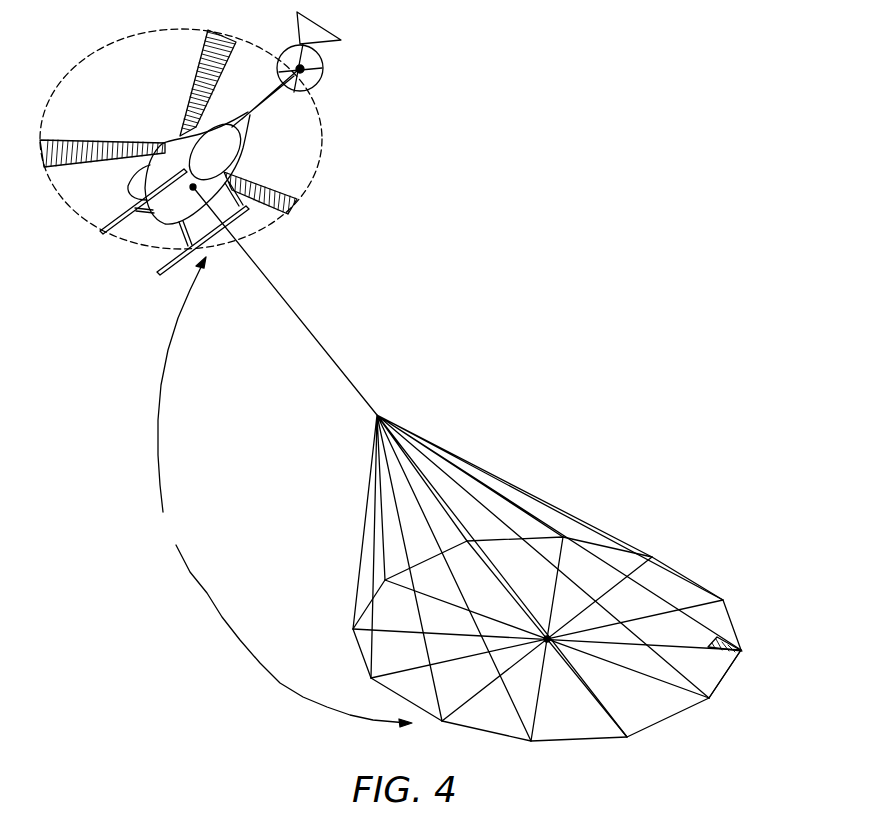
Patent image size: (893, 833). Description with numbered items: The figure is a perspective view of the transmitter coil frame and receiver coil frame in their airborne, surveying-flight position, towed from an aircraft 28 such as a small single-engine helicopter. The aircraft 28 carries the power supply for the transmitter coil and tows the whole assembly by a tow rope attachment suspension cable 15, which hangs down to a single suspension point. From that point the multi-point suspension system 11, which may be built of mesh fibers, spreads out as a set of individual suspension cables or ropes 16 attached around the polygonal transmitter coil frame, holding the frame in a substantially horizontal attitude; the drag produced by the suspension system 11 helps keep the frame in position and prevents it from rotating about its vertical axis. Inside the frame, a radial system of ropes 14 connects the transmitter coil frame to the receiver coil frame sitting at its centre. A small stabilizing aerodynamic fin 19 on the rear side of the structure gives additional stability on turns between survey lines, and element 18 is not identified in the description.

The suspension system 11 is at (285, 492).
The radial system of ropes 14 is at (708, 607).
The tow rope attachment suspension cable 15 is at (317, 338).
The suspension cable or rope 16 is at (545, 500).
The parachute canopy 18 is at (722, 683).
The stabilizing aerodynamic fin 19 is at (720, 657).
The aircraft 28 is at (333, 146).